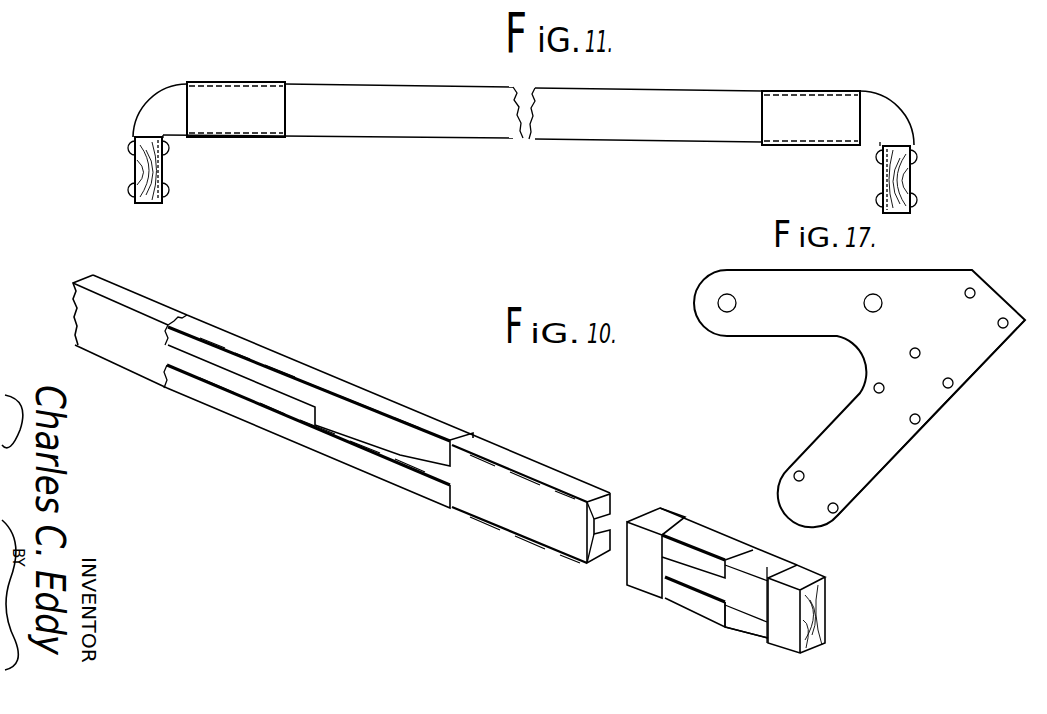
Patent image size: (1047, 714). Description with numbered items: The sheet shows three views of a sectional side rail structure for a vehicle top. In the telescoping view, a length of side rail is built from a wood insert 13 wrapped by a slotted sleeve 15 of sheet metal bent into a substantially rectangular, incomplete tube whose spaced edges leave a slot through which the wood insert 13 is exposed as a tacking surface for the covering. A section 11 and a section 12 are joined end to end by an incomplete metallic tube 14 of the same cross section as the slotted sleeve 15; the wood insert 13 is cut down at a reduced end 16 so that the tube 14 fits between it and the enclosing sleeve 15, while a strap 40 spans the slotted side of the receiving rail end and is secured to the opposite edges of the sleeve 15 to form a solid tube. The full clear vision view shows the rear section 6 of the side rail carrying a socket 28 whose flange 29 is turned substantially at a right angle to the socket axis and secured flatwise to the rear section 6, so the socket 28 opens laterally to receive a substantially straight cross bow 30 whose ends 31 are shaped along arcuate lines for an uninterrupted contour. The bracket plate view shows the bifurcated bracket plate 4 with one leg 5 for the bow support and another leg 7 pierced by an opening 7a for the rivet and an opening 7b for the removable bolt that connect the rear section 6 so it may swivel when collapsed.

In FIG. 17, the bifurcated bracket plate 4 is at (920, 383).
In FIG. 17, the leg 5 is at (873, 463).
In FIG. 11, the rear section 6 is at (133, 187).
In FIG. 17, the leg 7 is at (783, 320).
In FIG. 17, the opening 7a is at (875, 295).
In FIG. 17, the opening 7b is at (727, 300).
In FIG. 10, the section 11 is at (777, 620).
In FIG. 10, the section 12 is at (235, 378).
In FIG. 11, the wood insert 13 is at (143, 160).
In FIG. 10, the wood insert 13 is at (135, 303).
In FIG. 10, the incomplete metallic tube 14 is at (513, 490).
In FIG. 10, the slotted sleeve 15 is at (317, 393).
In FIG. 10, the reduced end 16 is at (765, 570).
In FIG. 11, the socket 28 is at (229, 96).
In FIG. 11, the flange 29 is at (163, 167).
In FIG. 11, the cross bow 30 is at (523, 132).
In FIG. 11, the ends 31 is at (148, 119).
In FIG. 10, the strap 40 is at (638, 567).